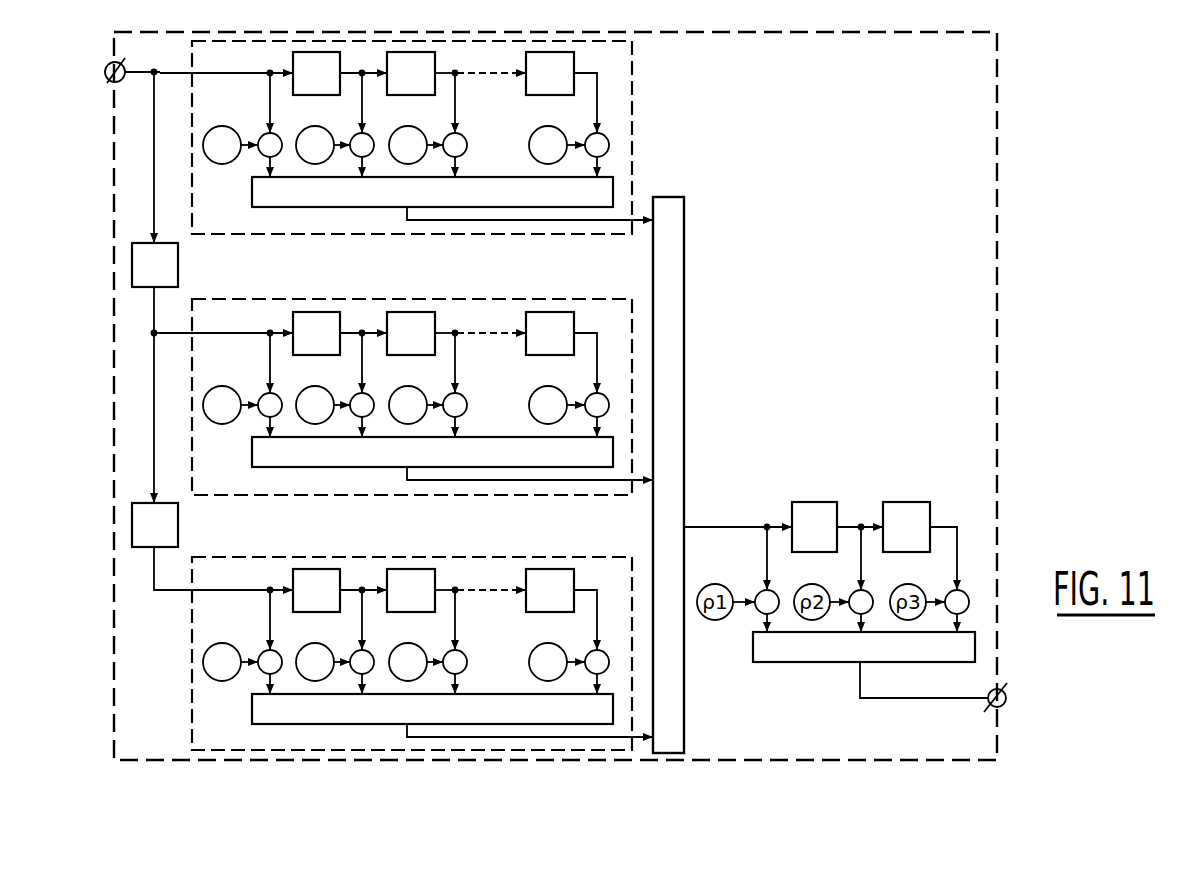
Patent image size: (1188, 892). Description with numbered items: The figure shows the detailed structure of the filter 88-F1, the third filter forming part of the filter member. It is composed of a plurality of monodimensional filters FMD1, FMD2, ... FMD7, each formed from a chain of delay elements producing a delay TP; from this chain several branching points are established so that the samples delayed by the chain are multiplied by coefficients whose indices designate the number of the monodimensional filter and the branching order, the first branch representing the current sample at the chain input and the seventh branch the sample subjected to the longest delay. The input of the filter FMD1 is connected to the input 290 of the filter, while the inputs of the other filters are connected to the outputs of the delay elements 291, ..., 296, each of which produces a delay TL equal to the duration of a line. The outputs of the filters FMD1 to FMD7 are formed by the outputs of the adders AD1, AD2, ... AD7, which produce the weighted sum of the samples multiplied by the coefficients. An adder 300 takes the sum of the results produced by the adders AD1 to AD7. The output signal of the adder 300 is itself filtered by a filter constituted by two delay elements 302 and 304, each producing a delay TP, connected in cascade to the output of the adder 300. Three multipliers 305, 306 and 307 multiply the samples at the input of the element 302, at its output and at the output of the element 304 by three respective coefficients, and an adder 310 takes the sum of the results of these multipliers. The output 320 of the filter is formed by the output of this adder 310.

The filter 88-F1 is at (997, 250).
The input 290 is at (106, 78).
The delay element 291 is at (180, 272).
The delay element 296 is at (180, 532).
The monodimensional filter FMD1 is at (346, 238).
The monodimensional filter FMD2 is at (345, 497).
The monodimensional filter FMD7 is at (503, 558).
The adder AD1 is at (514, 186).
The adder AD2 is at (432, 431).
The adder AD7 is at (432, 688).
The adder 300 is at (675, 264).
The delay element 302 is at (812, 502).
The delay element 304 is at (905, 502).
The multiplier 305 is at (760, 590).
The multiplier 306 is at (853, 590).
The multiplier 307 is at (948, 590).
The adder 310 is at (794, 655).
The output 320 is at (985, 707).